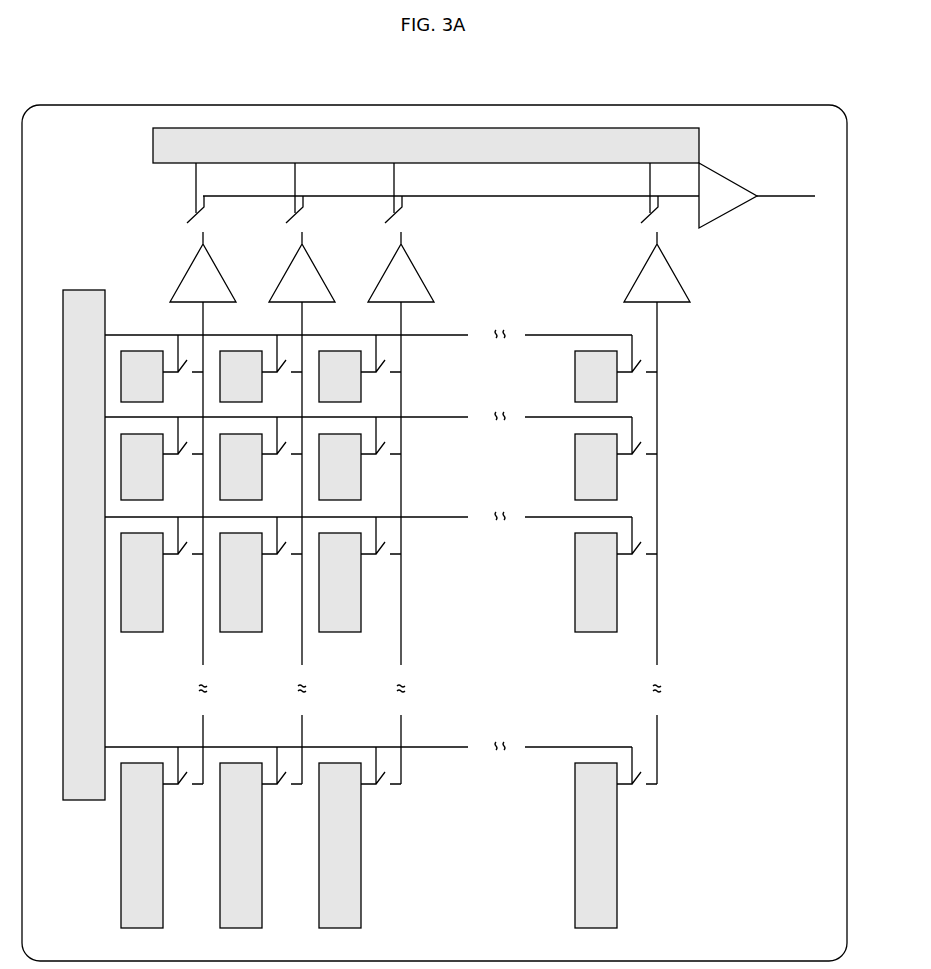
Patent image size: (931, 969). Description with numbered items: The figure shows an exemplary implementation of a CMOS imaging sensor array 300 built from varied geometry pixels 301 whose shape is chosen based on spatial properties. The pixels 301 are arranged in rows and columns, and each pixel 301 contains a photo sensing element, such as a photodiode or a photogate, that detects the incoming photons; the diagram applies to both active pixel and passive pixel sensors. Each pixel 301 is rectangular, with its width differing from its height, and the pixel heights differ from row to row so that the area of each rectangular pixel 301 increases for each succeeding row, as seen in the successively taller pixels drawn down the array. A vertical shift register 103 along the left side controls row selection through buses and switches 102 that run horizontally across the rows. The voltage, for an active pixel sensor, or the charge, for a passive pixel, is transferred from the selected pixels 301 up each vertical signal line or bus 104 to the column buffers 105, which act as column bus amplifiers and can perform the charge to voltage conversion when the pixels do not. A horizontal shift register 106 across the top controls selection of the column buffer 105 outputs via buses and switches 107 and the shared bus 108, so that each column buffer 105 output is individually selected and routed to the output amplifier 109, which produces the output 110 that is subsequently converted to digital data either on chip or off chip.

The CMOS imaging sensor array 300 is at (208, 105).
The pixel 301 is at (389, 631).
The row selection bus 102 is at (368, 533).
The vertical shift register 103 is at (84, 545).
The signal line 104 is at (440, 543).
The column buffer 105 is at (430, 267).
The horizontal shift register 106 is at (426, 145).
The column selection bus 107 is at (408, 193).
The output bus 108 is at (451, 187).
The output amplifier 109 is at (728, 195).
The output 110 is at (786, 187).